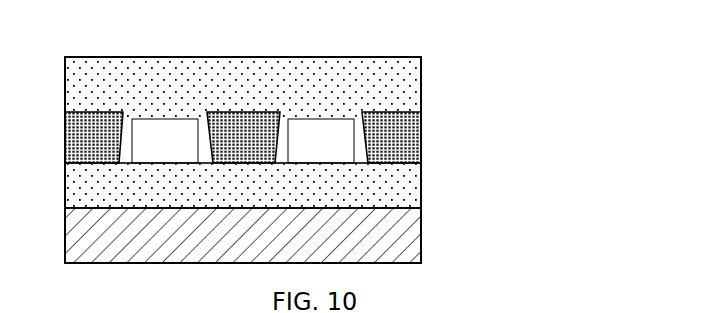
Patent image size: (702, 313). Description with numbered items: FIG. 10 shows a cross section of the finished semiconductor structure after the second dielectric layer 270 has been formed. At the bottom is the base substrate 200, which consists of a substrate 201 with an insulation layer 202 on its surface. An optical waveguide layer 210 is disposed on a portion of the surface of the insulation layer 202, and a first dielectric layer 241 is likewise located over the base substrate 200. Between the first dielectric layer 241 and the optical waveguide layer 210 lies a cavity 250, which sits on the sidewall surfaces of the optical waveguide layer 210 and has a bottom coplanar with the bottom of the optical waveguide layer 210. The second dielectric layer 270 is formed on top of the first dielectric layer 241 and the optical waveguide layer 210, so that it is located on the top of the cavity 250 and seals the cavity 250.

The base substrate 200 is at (505, 163).
The substrate 201 is at (393, 250).
The insulation layer 202 is at (393, 197).
The optical waveguide layer 210 is at (331, 147).
The first dielectric layer 241 is at (230, 132).
The cavity 250 is at (282, 130).
The second dielectric layer 270 is at (397, 82).